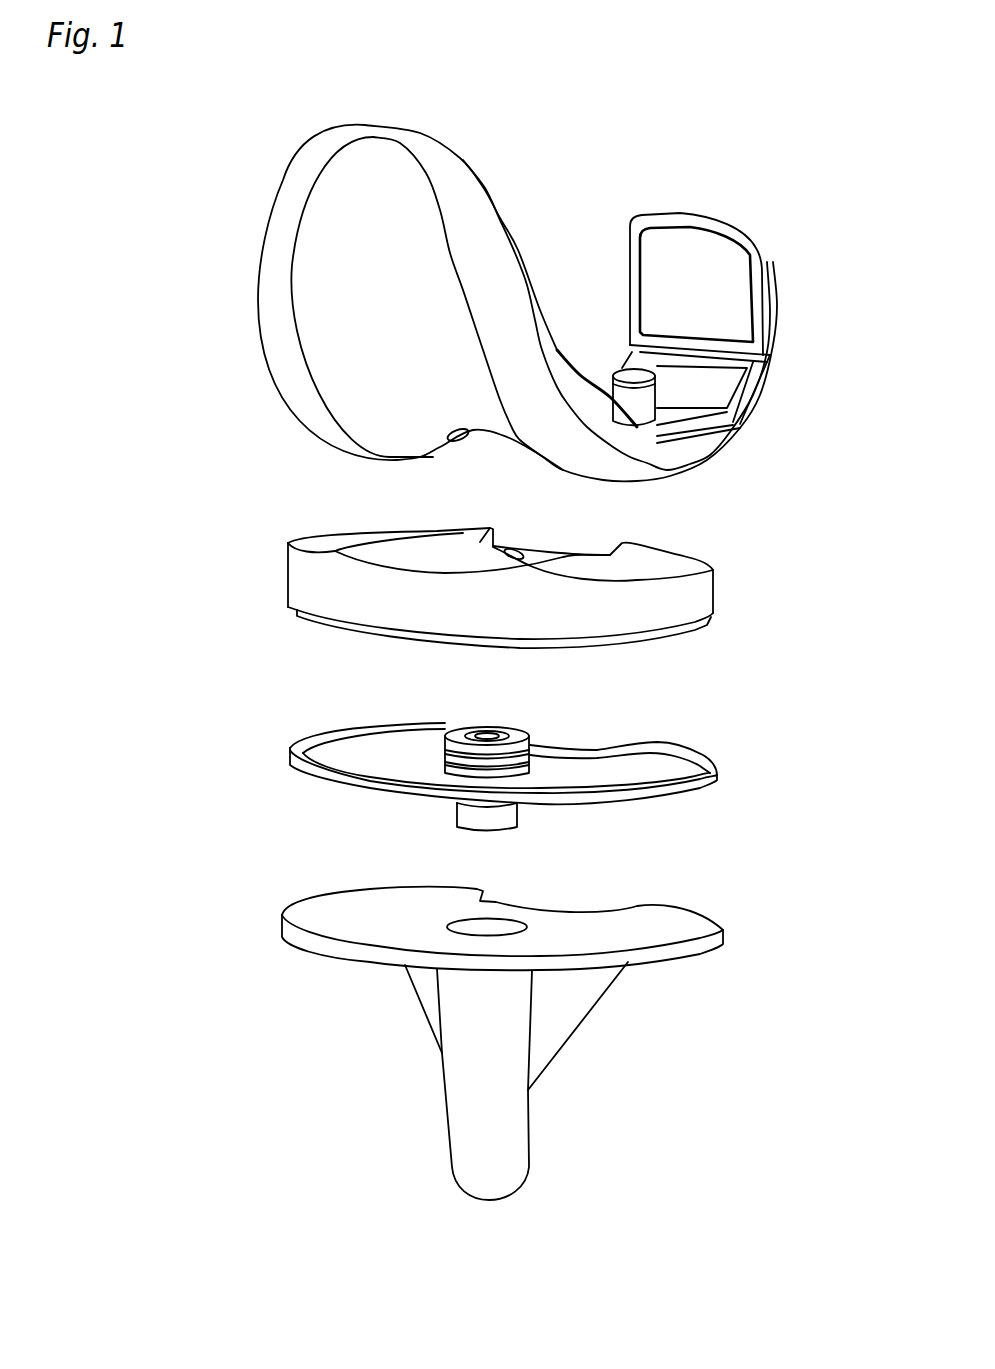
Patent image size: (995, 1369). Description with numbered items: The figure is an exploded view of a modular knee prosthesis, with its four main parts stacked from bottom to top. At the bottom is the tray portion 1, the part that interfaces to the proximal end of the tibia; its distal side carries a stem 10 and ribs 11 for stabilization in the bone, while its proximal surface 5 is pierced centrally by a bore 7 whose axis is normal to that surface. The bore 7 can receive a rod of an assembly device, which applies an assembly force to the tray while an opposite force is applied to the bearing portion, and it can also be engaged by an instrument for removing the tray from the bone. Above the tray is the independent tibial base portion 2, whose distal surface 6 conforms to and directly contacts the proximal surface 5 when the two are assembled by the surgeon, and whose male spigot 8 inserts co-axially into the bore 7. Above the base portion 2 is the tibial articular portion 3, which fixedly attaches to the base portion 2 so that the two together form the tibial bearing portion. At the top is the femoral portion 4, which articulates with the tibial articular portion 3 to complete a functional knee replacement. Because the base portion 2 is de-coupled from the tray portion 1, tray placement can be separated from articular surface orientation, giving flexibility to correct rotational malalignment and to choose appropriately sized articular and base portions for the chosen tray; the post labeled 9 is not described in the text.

The tray portion 1 is at (485, 1033).
The tibial base portion 2 is at (427, 766).
The tibial articular portion 3 is at (246, 584).
The femoral portion 4 is at (211, 332).
The proximal surface 5 is at (522, 918).
The distal surface 6 is at (344, 809).
The bore 7 is at (524, 903).
The male spigot 8 is at (457, 847).
The upper post of plate 9 is at (526, 703).
The stem 10 is at (526, 1124).
The rib 11 is at (588, 1017).